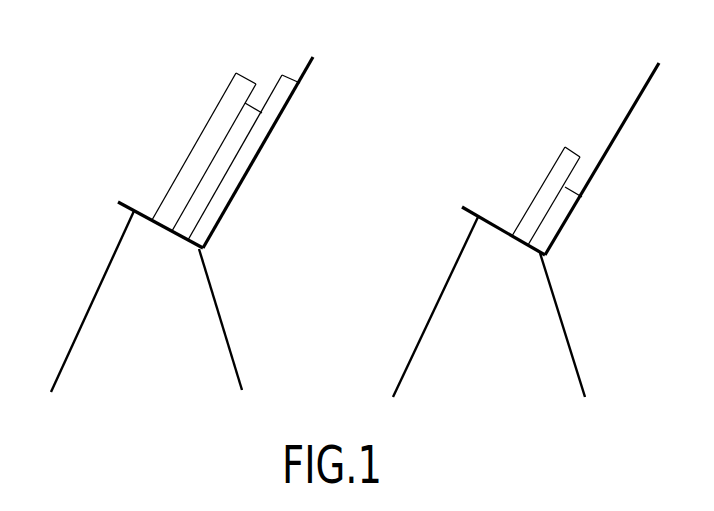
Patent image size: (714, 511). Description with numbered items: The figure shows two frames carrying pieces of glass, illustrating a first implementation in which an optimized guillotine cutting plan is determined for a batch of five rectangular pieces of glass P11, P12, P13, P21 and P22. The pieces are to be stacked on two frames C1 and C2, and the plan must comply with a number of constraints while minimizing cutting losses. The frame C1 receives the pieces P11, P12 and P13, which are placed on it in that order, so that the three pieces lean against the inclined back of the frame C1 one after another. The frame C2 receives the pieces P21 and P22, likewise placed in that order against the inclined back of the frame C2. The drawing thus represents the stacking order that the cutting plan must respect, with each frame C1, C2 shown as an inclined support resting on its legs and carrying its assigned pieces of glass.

The frame C1 is at (246, 225).
The frame C2 is at (593, 253).
The rectangular piece of glass P11 is at (292, 82).
The rectangular piece of glass P12 is at (184, 228).
The rectangular piece of glass P13 is at (246, 80).
The rectangular piece of glass P21 is at (573, 213).
The rectangular piece of glass P22 is at (563, 150).